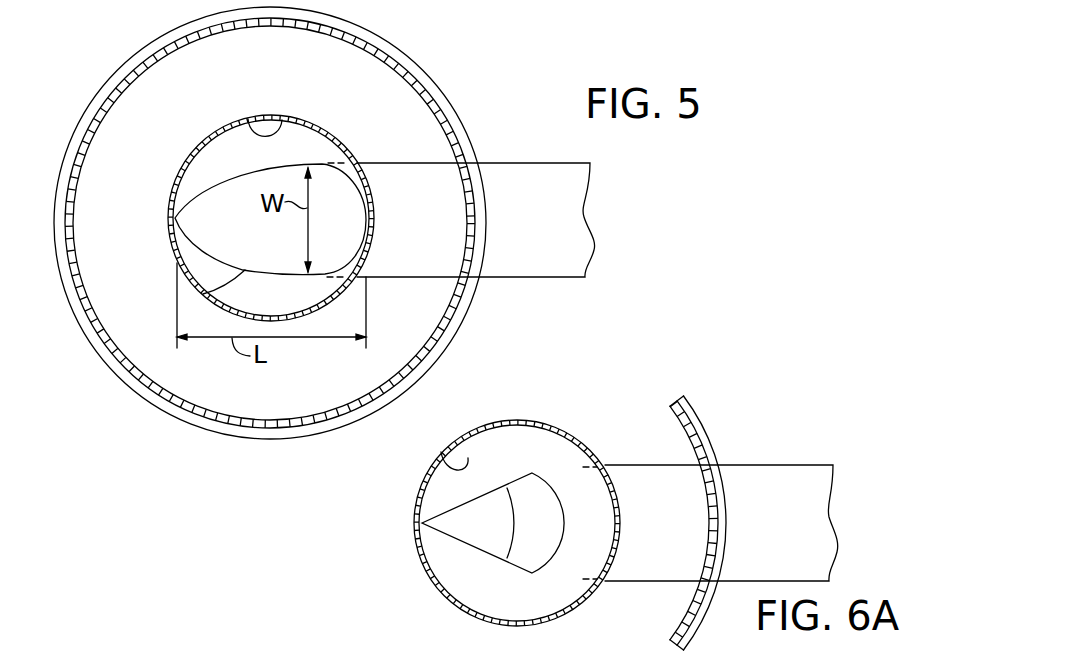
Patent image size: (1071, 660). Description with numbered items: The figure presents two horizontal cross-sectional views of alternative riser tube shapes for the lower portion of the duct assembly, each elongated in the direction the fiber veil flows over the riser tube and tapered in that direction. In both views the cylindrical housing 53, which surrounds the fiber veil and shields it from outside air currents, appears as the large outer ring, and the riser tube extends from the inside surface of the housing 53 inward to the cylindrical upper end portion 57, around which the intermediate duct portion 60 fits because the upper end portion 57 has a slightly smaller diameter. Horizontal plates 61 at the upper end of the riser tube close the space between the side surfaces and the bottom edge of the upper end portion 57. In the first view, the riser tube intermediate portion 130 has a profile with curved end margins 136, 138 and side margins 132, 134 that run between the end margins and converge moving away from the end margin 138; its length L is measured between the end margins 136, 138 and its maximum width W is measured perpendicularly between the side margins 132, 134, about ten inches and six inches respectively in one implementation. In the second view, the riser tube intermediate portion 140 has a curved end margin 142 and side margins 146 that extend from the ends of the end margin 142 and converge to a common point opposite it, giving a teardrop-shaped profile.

In FIG. 5, the cylindrical housing 53 is at (408, 70).
In FIG. 6A, the cylindrical housing 53 is at (700, 428).
In FIG. 5, the riser tube upper end portion 57 is at (283, 119).
In FIG. 6A, the riser tube upper end portion 57 is at (453, 458).
In FIG. 5, the intermediate duct portion 60 is at (213, 133).
In FIG. 6A, the intermediate duct portion 60 is at (423, 490).
In FIG. 5, the horizontal plates 61 is at (265, 160).
In FIG. 6A, the horizontal plates 61 is at (527, 464).
In FIG. 5, the riser tube intermediate portion 130 is at (408, 182).
In FIG. 5, the side margin 132 is at (237, 172).
In FIG. 5, the side margin 134 is at (207, 291).
In FIG. 5, the curved end margin 136 is at (172, 218).
In FIG. 5, the curved end margin 138 is at (378, 225).
In FIG. 6A, the riser tube intermediate portion 140 is at (653, 502).
In FIG. 6A, the curved end margin 142 is at (615, 526).
In FIG. 6A, the side margins 146 is at (510, 523).